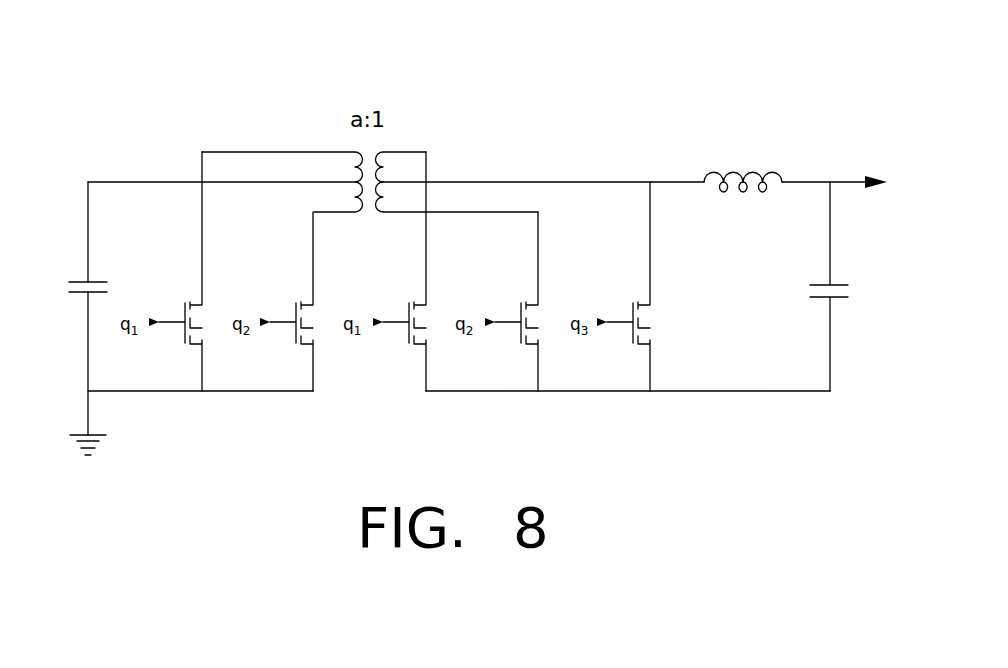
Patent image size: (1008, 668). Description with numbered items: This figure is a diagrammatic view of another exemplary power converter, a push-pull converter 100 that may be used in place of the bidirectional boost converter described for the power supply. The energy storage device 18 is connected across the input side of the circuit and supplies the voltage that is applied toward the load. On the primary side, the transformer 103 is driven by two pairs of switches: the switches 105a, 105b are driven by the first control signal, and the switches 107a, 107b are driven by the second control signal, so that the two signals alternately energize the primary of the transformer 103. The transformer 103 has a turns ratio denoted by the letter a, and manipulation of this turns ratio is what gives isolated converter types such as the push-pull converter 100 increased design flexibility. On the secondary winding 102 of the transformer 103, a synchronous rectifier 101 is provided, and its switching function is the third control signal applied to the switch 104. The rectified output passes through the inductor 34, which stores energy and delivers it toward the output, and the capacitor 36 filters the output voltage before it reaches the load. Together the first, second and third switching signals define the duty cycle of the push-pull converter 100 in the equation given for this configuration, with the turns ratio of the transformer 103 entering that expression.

The push-pull converter 100 is at (711, 81).
The synchronous rectifier 101 is at (700, 165).
The secondary winding 102 is at (385, 158).
The transformer 103 is at (333, 133).
The switch 104 is at (656, 316).
The switch 105a is at (212, 303).
The switch 105b is at (432, 303).
The switch 107a is at (323, 303).
The switch 107b is at (544, 303).
The energy storage device 18 is at (81, 282).
The inductor 34 is at (752, 176).
The capacitor 36 is at (836, 283).